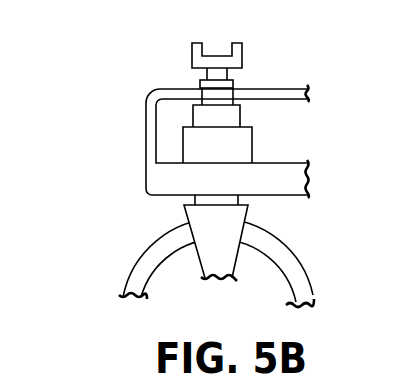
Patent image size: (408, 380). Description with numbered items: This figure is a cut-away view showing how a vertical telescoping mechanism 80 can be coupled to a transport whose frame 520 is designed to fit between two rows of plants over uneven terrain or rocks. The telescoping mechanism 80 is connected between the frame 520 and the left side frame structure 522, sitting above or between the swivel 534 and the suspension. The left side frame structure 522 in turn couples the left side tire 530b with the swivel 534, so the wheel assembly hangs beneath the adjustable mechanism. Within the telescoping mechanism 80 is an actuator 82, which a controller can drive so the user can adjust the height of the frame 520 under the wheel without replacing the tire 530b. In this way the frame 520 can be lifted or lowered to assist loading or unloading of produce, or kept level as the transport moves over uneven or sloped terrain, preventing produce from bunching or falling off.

The vertical telescoping mechanism 80 is at (278, 128).
The actuator 82 is at (234, 145).
The frame 520 is at (243, 52).
The left side frame structure 522 is at (154, 92).
The left side tire 530b is at (283, 245).
The swivel 534 is at (140, 217).